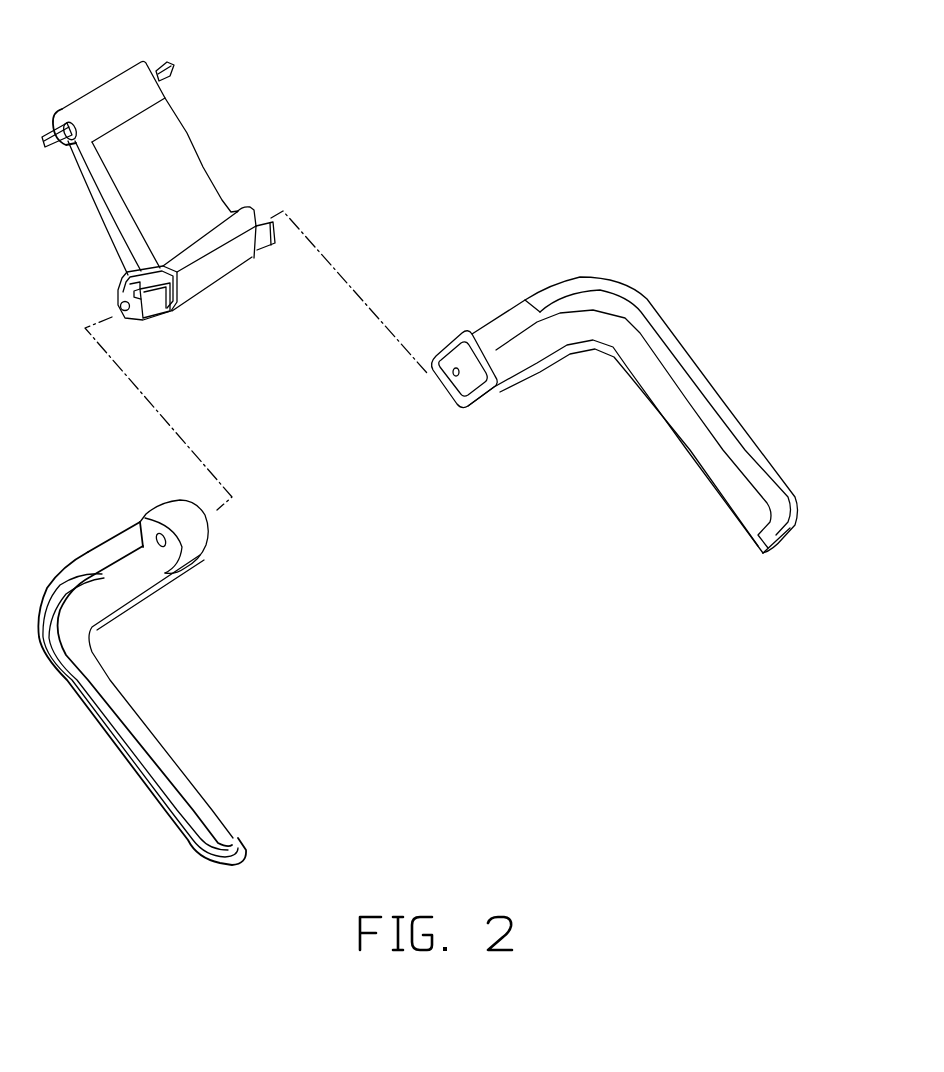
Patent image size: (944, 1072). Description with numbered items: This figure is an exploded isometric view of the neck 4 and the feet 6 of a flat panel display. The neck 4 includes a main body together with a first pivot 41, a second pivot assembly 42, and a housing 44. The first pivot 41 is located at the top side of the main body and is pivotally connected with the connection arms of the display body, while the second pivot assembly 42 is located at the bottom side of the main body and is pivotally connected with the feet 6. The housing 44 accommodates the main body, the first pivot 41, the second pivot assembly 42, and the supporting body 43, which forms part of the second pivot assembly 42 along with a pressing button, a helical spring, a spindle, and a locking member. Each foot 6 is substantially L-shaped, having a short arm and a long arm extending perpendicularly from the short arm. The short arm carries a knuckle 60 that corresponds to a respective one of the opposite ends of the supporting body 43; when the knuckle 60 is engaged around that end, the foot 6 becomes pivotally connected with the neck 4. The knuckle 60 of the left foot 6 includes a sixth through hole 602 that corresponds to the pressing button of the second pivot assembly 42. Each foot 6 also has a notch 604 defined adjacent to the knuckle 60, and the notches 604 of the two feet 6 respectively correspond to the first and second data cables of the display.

The neck 4 is at (98, 68).
The first pivot 41 is at (170, 73).
The second pivot assembly 42 is at (112, 307).
The supporting body 43 is at (155, 308).
The housing 44 is at (162, 153).
The foot 6 is at (108, 792).
The knuckle 60 is at (190, 523).
The sixth through hole 602 is at (165, 541).
The notch 604 is at (505, 320).